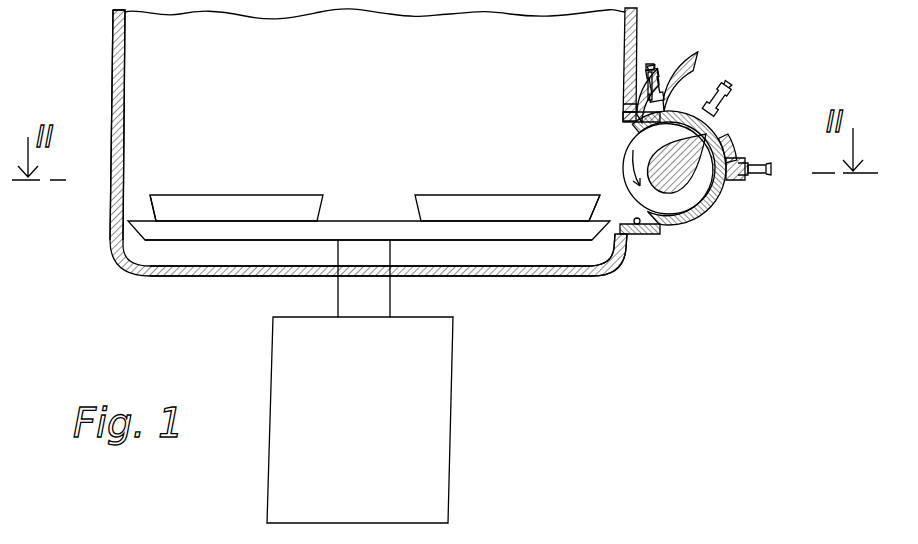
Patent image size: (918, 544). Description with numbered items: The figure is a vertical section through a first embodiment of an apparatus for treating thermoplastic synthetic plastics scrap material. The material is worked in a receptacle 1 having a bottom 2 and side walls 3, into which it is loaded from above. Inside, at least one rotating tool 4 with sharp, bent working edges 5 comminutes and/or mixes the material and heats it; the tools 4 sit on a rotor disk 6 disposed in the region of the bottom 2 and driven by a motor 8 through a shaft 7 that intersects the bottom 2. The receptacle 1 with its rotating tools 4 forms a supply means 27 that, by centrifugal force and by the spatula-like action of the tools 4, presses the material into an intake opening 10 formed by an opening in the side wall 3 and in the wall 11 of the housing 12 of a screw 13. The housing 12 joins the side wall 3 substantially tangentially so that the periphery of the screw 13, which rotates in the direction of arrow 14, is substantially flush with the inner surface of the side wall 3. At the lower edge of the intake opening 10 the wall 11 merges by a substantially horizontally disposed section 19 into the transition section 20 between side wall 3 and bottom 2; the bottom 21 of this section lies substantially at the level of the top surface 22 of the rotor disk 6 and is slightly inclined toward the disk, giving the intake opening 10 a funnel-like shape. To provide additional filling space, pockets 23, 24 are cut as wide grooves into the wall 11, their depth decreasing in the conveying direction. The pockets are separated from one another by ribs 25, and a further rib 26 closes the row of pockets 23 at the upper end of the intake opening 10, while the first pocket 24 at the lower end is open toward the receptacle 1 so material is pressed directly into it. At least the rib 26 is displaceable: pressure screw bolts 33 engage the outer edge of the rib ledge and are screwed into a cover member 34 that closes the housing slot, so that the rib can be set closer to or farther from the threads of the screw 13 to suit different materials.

The receptacle 1 is at (110, 60).
The bottom 2 is at (520, 278).
The side walls 3 is at (128, 46).
The rotating tool 4 is at (230, 192).
The working edges 5 is at (153, 195).
The rotor disk 6 is at (246, 237).
The shaft 7 is at (392, 292).
The motor 8 is at (449, 414).
The intake opening 10 is at (630, 136).
The wall 11 is at (700, 108).
The housing 12 is at (745, 154).
The screw 13 is at (660, 157).
The arrow 14 is at (631, 172).
The horizontally disposed section 19 is at (679, 228).
The transition section 20 is at (612, 268).
The bottom 21 is at (640, 232).
The top surface 22 is at (360, 220).
The pockets 23 is at (672, 118).
The first pocket 24 is at (712, 212).
The ribs 25 is at (726, 112).
The further rib 26 is at (632, 110).
The supply means 27 is at (342, 146).
The pressure screw bolts 33 is at (770, 172).
The cover member 34 is at (660, 92).